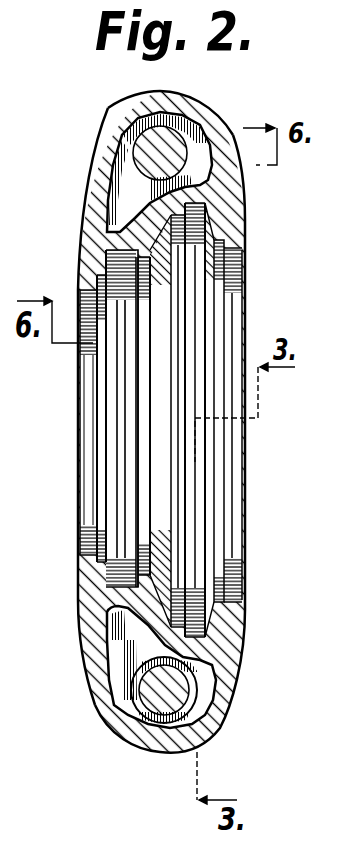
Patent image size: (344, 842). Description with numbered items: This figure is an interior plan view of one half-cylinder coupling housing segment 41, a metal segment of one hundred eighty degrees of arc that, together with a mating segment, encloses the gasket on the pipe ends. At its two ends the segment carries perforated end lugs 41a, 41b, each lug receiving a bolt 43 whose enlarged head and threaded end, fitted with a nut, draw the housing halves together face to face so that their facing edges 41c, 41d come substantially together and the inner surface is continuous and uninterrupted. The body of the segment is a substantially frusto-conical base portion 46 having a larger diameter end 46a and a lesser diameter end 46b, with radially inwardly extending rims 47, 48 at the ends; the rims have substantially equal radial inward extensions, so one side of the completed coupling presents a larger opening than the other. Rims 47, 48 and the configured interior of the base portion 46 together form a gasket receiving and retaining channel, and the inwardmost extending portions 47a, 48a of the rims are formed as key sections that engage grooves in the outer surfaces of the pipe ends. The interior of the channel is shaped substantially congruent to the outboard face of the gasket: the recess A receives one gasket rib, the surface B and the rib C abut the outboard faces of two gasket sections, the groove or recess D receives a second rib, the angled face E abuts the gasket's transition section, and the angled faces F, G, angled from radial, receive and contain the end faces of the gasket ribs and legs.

The coupling housing segment 41 is at (78, 607).
The end lug 41a is at (96, 138).
The end lug 41b is at (86, 648).
The facing edge 41c is at (110, 106).
The facing edge 41d is at (93, 688).
The bolt 43 is at (172, 118).
The frusto-conical base portion 46 is at (152, 205).
The larger diameter end 46a is at (230, 200).
The lesser diameter end 46b is at (95, 245).
The rim 47 is at (232, 222).
The inwardmost extending portion 47a is at (238, 269).
The rim 48 is at (88, 258).
The inwardmost extending portion 48a is at (86, 290).
The recess A is at (199, 525).
The surface B is at (174, 550).
The rib C is at (143, 418).
The groove or recess D is at (127, 392).
The angled face E is at (165, 494).
The angled face F is at (207, 313).
The angled face G is at (117, 372).